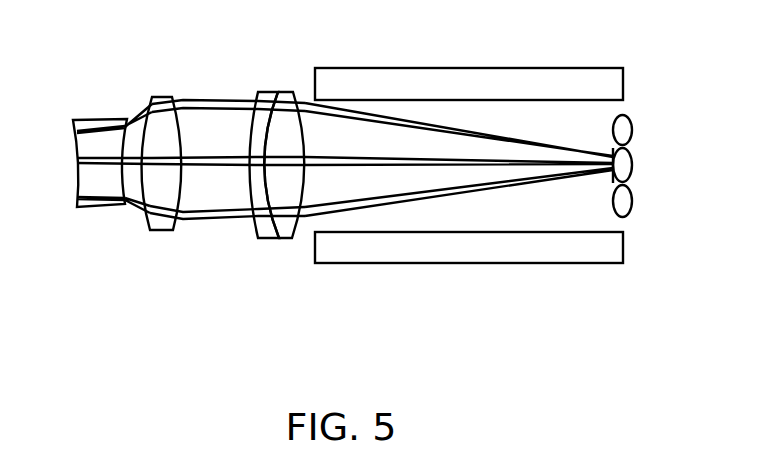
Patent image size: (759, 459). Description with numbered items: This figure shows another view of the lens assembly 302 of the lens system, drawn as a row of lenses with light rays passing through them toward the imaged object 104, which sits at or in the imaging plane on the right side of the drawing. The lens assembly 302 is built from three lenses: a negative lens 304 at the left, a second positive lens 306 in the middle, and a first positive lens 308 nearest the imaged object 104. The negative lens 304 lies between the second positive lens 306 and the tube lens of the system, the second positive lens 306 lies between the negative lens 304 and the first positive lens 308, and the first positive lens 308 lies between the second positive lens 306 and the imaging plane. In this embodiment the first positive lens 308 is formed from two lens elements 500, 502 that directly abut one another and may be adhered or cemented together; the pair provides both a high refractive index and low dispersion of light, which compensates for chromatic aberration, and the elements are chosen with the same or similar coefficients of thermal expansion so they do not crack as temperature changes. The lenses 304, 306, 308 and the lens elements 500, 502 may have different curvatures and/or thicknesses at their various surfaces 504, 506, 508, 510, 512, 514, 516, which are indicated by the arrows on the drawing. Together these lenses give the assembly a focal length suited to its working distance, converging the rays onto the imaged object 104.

The imaged object 104 is at (633, 164).
The lens assembly 302 is at (200, 206).
The negative lens 304 is at (98, 208).
The second positive lens 306 is at (160, 231).
The first positive lens 308 is at (277, 173).
The lens element 500 is at (268, 92).
The lens element 502 is at (283, 92).
The surface 504 is at (68, 156).
The surface 506 is at (128, 140).
The surface 508 is at (138, 199).
The surface 510 is at (192, 200).
The surface 512 is at (233, 127).
The surface 514 is at (255, 202).
The surface 516 is at (318, 195).